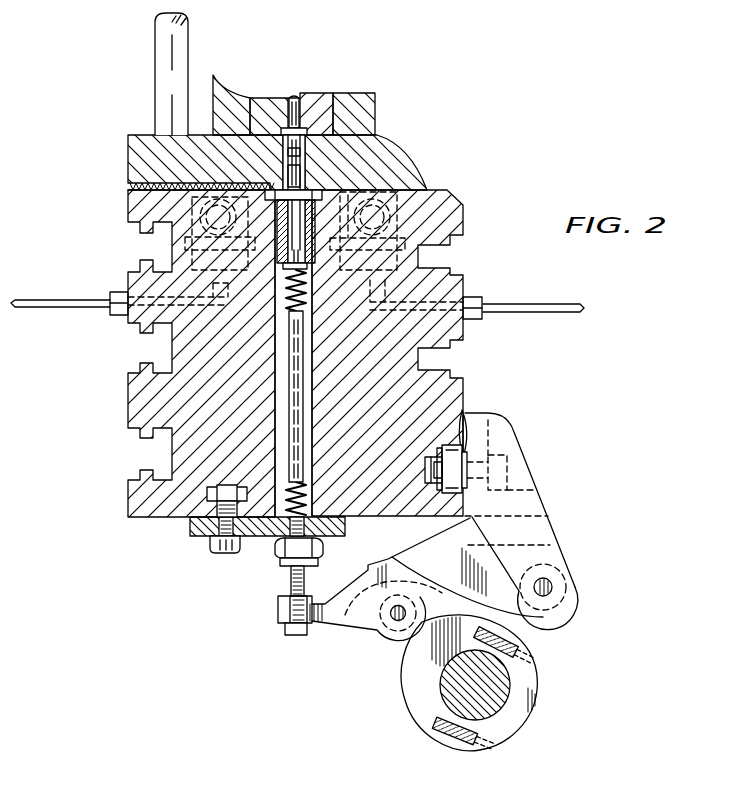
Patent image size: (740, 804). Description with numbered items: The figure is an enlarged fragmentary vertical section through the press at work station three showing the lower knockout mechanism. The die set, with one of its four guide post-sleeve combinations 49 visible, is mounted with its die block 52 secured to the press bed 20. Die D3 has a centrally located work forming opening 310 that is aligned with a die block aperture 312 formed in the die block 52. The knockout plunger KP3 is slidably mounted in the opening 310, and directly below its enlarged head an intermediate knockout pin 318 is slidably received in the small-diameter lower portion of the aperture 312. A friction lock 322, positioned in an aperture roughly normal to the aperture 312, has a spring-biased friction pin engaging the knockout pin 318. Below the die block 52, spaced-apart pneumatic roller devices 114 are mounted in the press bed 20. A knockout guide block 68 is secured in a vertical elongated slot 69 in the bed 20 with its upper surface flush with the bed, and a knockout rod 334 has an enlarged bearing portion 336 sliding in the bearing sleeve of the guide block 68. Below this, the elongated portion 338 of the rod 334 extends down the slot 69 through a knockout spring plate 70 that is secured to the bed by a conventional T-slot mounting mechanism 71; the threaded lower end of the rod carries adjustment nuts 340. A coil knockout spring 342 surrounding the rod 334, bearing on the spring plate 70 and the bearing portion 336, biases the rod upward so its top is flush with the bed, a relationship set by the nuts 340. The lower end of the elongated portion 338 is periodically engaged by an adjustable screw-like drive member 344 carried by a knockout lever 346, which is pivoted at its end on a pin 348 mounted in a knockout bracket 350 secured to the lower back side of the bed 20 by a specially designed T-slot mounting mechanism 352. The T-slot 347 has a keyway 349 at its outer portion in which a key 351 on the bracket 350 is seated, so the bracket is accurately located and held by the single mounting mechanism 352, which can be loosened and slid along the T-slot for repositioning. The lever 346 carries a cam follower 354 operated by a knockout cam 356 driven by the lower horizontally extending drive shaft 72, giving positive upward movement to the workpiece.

The press bed 20 is at (452, 222).
The guide post-sleeve combination 49 is at (155, 77).
The knockout plunger KP3 is at (292, 98).
The work forming opening 310 is at (298, 100).
The die block aperture 312 is at (300, 177).
The intermediate knockout pin 318 is at (297, 158).
The die block 52 is at (392, 160).
The friction lock 322 is at (126, 187).
The pneumatic roller device 114 is at (180, 241).
The knockout guide block 68 is at (276, 255).
The vertical elongated slot 69 is at (314, 433).
The enlarged bearing portion 336 is at (302, 242).
The coil knockout spring 342 is at (283, 303).
The knockout rod 334 is at (296, 389).
The elongated portion 338 is at (298, 450).
The knockout spring plate 70 is at (257, 522).
The T-slot mounting mechanism 71 is at (228, 496).
The adjustment nuts 340 is at (286, 570).
The adjustable screw-like drive member 344 is at (280, 600).
The knockout lever 346 is at (318, 625).
The cam follower 354 is at (390, 640).
The knockout cam 356 is at (540, 686).
The lower horizontally extending drive shaft 72 is at (496, 703).
The knockout bracket 350 is at (520, 478).
The pin 348 is at (562, 573).
The keyway 349 is at (466, 435).
The key 351 is at (467, 455).
The T-slot 347 is at (443, 493).
The T-slot mounting mechanism 352 is at (424, 443).